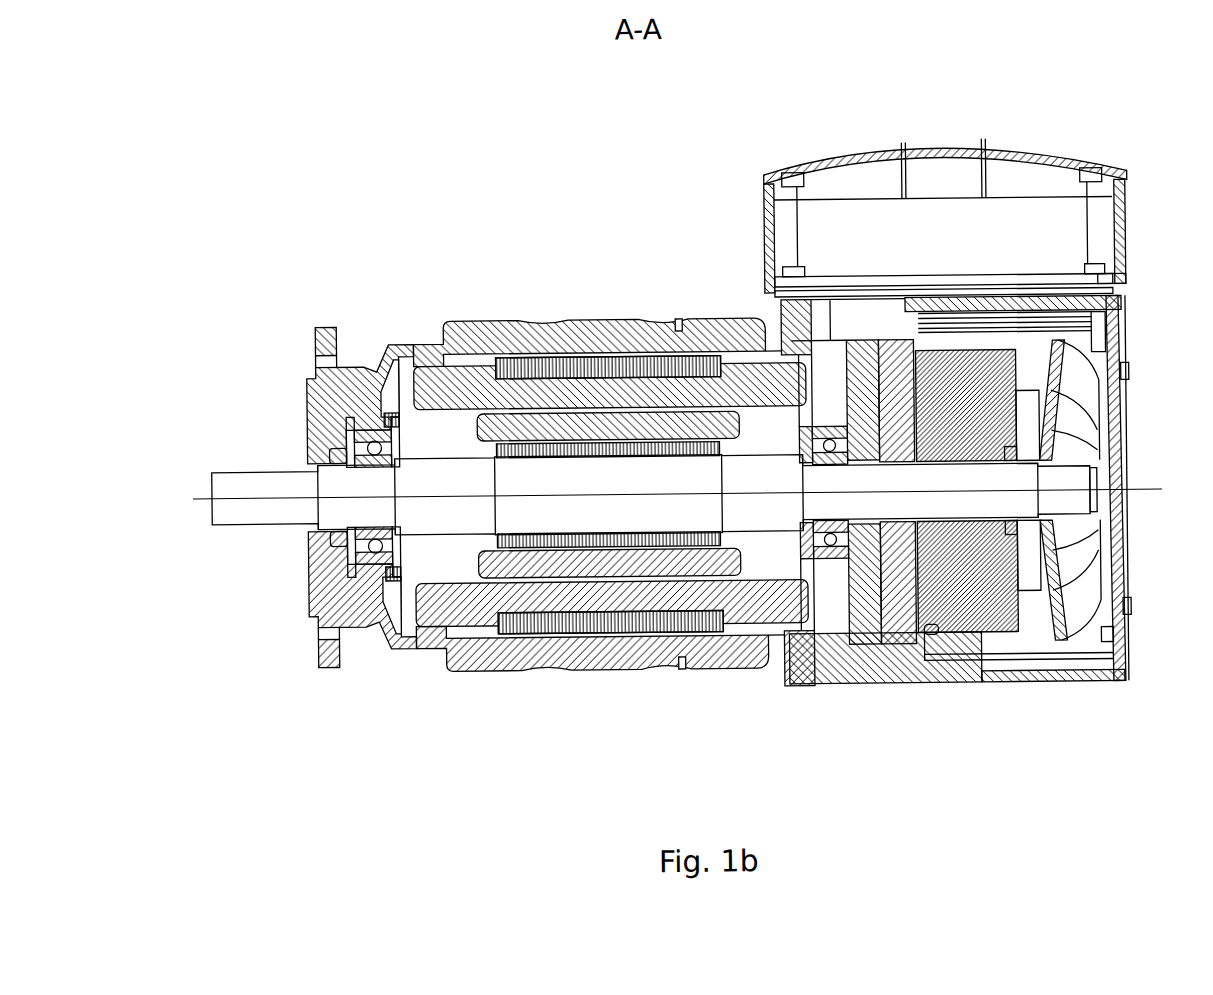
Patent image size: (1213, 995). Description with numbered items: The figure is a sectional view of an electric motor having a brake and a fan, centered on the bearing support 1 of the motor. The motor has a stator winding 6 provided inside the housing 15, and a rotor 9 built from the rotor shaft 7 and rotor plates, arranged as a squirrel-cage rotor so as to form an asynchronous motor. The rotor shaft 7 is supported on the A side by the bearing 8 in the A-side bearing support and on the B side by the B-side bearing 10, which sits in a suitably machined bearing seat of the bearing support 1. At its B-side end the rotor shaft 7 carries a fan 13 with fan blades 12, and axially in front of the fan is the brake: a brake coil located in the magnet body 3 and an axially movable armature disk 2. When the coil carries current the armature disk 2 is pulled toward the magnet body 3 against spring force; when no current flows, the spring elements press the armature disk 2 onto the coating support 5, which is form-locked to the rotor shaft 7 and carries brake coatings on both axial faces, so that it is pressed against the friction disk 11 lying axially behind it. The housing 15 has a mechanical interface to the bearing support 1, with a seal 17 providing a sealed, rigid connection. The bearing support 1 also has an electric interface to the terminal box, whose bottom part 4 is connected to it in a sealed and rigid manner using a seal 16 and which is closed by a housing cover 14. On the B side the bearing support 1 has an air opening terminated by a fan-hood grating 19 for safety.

The bearing support 1 is at (988, 387).
The armature disk 2 is at (1019, 691).
The magnet body 3 is at (1043, 355).
The bottom part 4 is at (907, 210).
The coating support 5 is at (861, 352).
The stator winding 6 is at (576, 410).
The rotor shaft 7 is at (357, 410).
The bearing 8 is at (319, 548).
The rotor 9 is at (610, 585).
The B-side bearing 10 is at (795, 593).
The friction disk 11 is at (851, 550).
The fan blades 12 is at (1101, 490).
The fan 13 is at (1058, 490).
The housing cover 14 is at (944, 119).
The housing 15 is at (609, 392).
The seal 16 is at (942, 176).
The seal 17 is at (718, 418).
The fan-hood grating 19 is at (1152, 626).